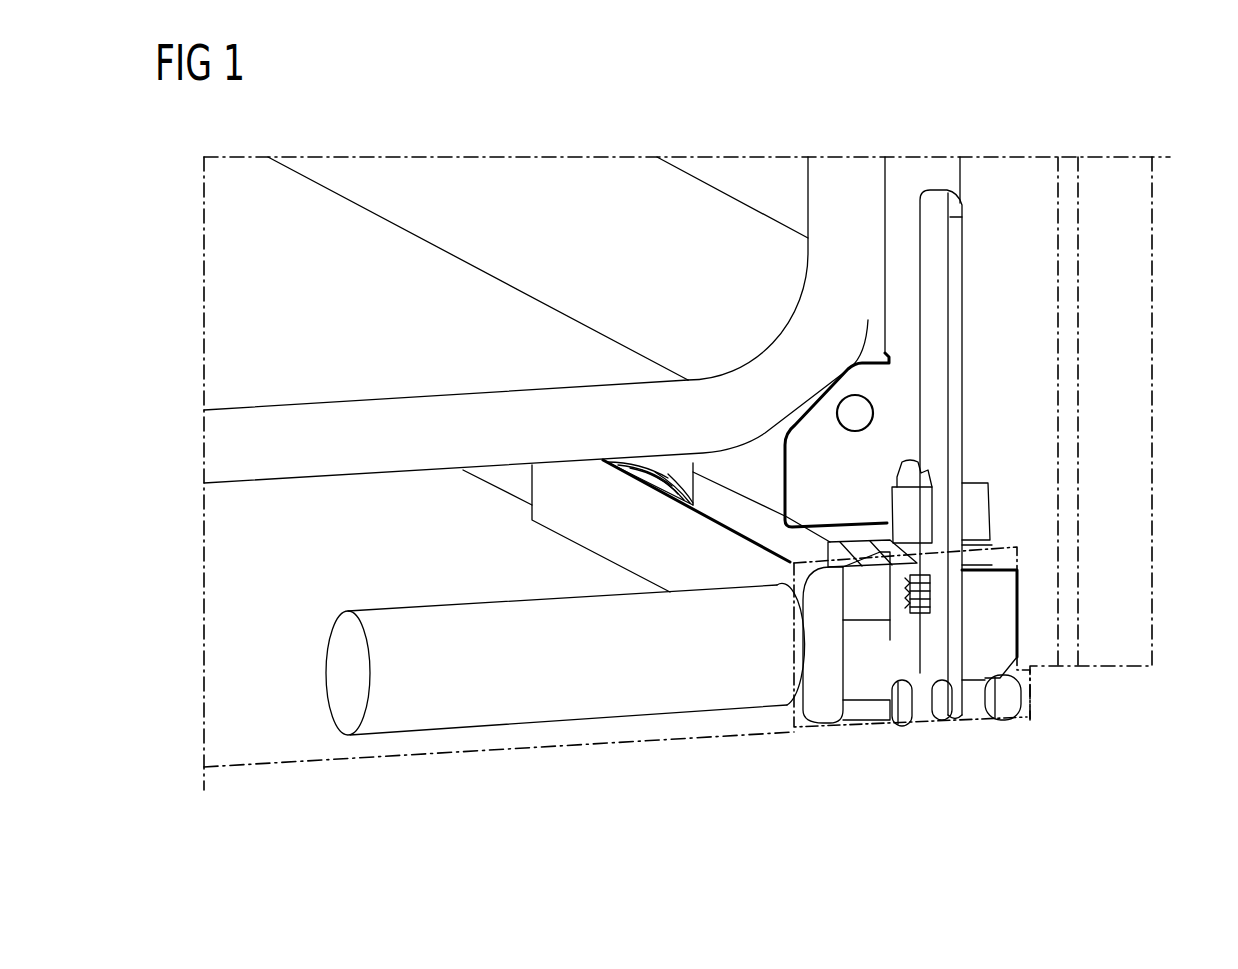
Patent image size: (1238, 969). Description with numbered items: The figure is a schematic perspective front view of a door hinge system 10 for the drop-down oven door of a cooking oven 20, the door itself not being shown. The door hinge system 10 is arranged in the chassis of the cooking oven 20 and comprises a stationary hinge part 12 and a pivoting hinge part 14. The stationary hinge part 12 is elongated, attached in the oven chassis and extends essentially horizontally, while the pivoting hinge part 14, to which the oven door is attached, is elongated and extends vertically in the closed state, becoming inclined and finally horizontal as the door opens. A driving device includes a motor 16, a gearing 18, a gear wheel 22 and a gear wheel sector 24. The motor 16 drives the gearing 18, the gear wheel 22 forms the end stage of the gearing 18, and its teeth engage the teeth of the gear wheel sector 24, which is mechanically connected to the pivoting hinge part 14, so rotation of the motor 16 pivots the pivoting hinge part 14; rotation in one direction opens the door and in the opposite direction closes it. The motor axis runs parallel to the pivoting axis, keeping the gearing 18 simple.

The door hinge system 10 is at (1030, 768).
The stationary hinge part 12 is at (577, 520).
The pivoting hinge part 14 is at (935, 303).
The motor 16 is at (551, 700).
The gearing 18 is at (862, 683).
The cooking oven 20 is at (1136, 121).
The gear wheel 22 is at (930, 593).
The gear wheel sector 24 is at (928, 680).